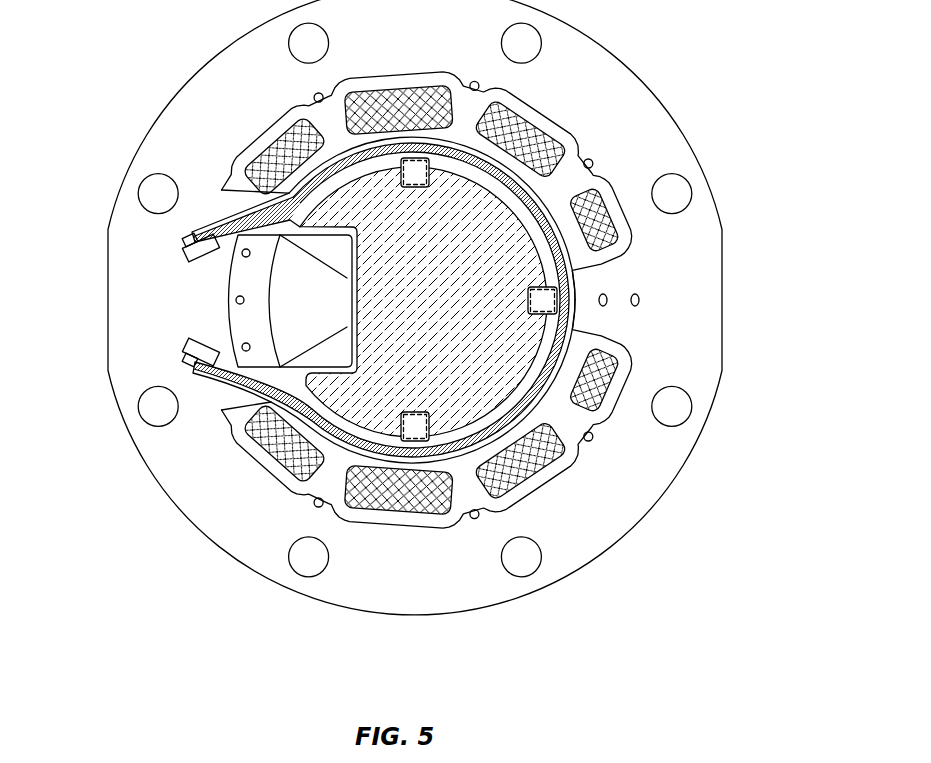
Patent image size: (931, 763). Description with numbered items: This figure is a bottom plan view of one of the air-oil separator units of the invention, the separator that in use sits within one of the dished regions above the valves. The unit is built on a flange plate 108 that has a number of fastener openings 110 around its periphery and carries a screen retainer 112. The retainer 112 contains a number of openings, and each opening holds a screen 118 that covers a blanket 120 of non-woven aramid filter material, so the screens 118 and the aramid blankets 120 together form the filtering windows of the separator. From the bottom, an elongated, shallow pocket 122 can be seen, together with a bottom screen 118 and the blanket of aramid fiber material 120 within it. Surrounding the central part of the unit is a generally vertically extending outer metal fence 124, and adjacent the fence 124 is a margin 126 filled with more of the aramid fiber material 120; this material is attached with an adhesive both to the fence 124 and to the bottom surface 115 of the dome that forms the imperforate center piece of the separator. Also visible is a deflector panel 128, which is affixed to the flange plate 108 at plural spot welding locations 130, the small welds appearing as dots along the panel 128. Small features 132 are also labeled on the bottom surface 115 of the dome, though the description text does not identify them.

The flange plate 108 is at (700, 343).
The fastener openings 110 is at (535, 43).
The screen retainer 112 is at (545, 490).
The bottom surface 115 is at (465, 336).
The screen 118 is at (580, 465).
The blanket of aramid filter material 120 is at (407, 493).
The pocket 122 is at (432, 520).
The outer metal fence 124 is at (585, 296).
The margin 126 is at (223, 372).
The deflector panel 128 is at (348, 284).
The spot welding locations 130 is at (236, 299).
The tabs 132 is at (420, 418).